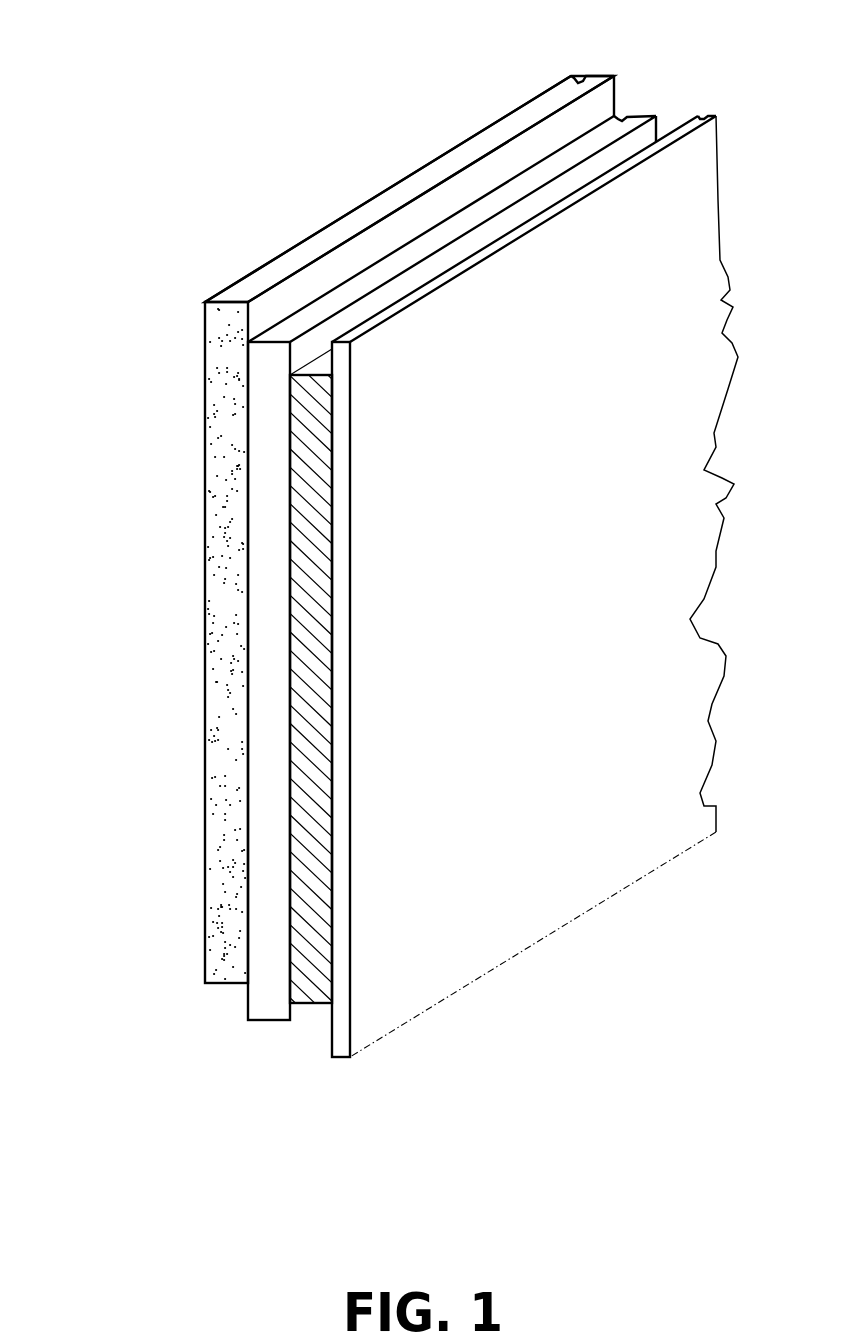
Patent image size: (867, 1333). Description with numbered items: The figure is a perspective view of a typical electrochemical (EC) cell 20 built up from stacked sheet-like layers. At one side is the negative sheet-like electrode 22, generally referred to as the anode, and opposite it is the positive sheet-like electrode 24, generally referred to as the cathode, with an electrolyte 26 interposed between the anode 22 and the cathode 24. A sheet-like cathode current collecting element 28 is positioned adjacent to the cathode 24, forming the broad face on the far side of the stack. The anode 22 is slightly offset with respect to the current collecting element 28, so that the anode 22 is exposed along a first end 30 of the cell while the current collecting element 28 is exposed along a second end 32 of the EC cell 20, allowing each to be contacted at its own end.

The electrochemical (EC) cell 20 is at (172, 97).
The negative sheet-like electrode 22 is at (217, 1003).
The positive sheet-like electrode 24 is at (309, 1019).
The electrolyte 26 is at (258, 1038).
The cathode current collecting element 28 is at (380, 1024).
The first end 30 is at (300, 255).
The second end 32 is at (337, 1047).